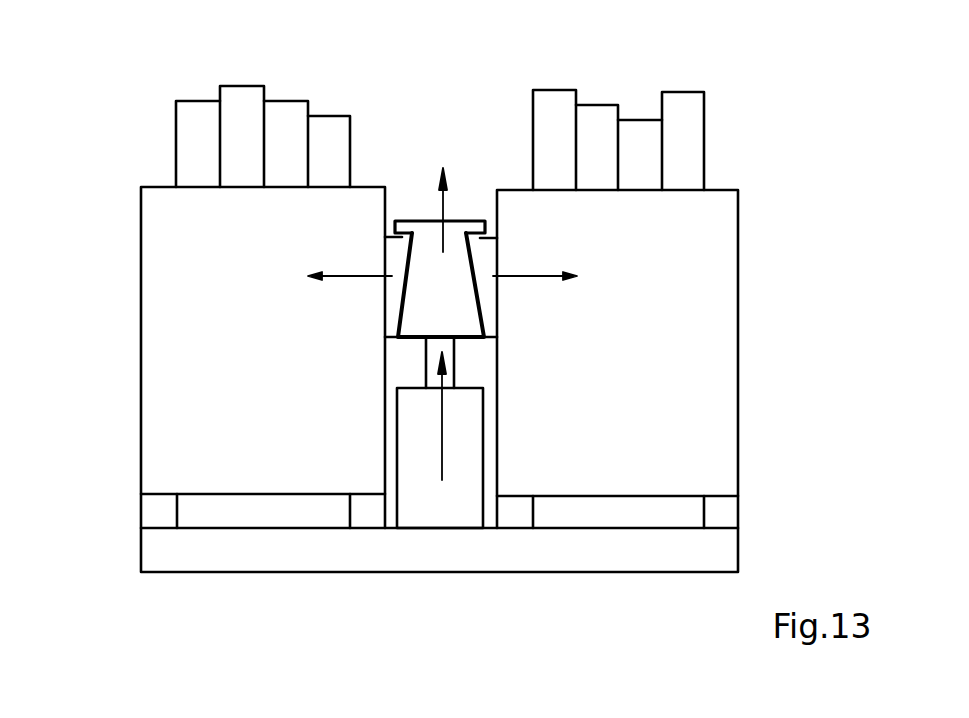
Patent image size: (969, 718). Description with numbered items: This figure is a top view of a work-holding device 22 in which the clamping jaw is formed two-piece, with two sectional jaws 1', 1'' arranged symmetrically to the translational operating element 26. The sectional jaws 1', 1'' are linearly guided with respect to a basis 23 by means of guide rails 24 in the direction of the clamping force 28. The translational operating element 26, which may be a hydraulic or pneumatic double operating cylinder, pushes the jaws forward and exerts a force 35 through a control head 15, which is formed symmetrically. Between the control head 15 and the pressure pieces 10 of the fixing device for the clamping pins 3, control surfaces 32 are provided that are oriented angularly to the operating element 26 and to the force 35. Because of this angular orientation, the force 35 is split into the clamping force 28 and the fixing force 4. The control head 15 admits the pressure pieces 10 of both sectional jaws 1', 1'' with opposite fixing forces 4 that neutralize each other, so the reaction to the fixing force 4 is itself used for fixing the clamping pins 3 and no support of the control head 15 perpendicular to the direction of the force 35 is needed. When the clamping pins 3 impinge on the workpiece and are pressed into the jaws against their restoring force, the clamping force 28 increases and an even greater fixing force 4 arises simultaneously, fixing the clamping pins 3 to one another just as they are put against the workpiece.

The sectional jaw 1' is at (215, 340).
The sectional jaw 1'' is at (655, 343).
The clamping pins 3 is at (200, 113).
The fixing force 4 is at (368, 276).
The pressure piece 10 is at (392, 253).
The control head 15 is at (416, 315).
The work-holding device 22 is at (755, 121).
The basis 23 is at (219, 557).
The guide rails 24 is at (267, 511).
The translational operating element 26 is at (468, 500).
The clamping force 28 is at (446, 198).
The control surfaces 32 is at (432, 57).
The force 35 is at (443, 482).